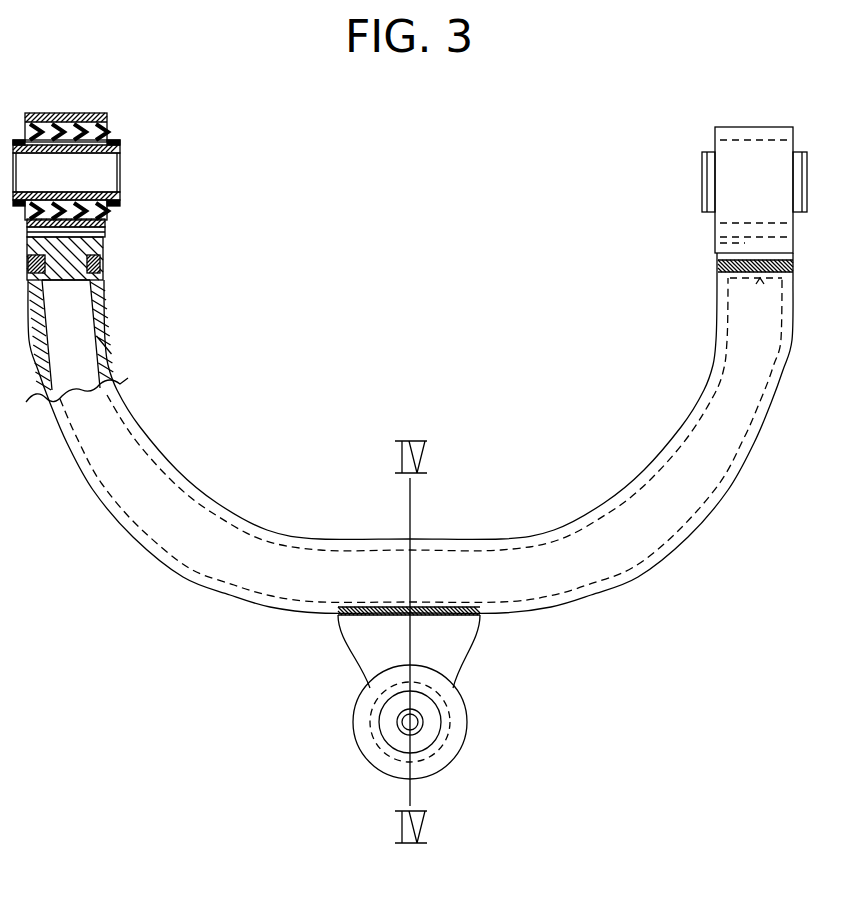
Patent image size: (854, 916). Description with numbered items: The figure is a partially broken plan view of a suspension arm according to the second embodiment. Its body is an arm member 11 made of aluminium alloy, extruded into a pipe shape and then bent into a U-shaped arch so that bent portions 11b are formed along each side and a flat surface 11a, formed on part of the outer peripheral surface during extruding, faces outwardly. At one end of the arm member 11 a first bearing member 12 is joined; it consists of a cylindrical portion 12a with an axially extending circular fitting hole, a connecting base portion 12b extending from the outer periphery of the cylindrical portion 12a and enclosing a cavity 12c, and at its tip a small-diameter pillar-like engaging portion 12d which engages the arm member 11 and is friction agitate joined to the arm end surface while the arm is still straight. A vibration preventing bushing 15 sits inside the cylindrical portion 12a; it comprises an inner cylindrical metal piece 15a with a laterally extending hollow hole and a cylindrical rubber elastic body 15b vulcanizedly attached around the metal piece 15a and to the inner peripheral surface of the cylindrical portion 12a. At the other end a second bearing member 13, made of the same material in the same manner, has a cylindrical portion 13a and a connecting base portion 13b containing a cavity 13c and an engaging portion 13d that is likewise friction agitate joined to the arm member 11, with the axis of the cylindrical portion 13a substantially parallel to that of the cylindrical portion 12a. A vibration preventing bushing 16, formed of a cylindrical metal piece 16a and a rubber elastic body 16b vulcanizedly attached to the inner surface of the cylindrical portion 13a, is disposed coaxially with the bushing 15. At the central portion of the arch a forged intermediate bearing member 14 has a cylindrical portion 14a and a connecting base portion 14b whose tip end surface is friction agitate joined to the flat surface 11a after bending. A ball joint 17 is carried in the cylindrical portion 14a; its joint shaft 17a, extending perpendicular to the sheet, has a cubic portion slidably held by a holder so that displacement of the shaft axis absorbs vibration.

The arm member 11 is at (410, 461).
The flat surface 11a is at (240, 597).
The bent portions 11b is at (128, 484).
The first bearing member 12 is at (152, 245).
The cylindrical portion 12a is at (105, 218).
The connecting base portion 12b is at (88, 243).
The cavity 12c is at (97, 232).
The engaging portion 12d is at (63, 265).
The second bearing member 13 is at (662, 223).
The cylindrical portion 13a is at (740, 198).
The connecting base portion 13b is at (743, 254).
The cavity 13c is at (743, 243).
The engaging portion 13d is at (760, 283).
The intermediate bearing member 14 is at (481, 693).
The cylindrical portion 14a is at (467, 723).
The connecting base portion 14b is at (457, 633).
The vibration preventing bushing 15 is at (148, 141).
The inner cylindrical metal piece 15a is at (113, 147).
The rubber elastic body 15b is at (106, 134).
The vibration preventing bushing 16 is at (669, 156).
The cylindrical metal piece 16a is at (702, 185).
The rubber elastic body 16b is at (713, 155).
The ball joint 17 is at (346, 732).
The joint shaft 17a is at (398, 725).